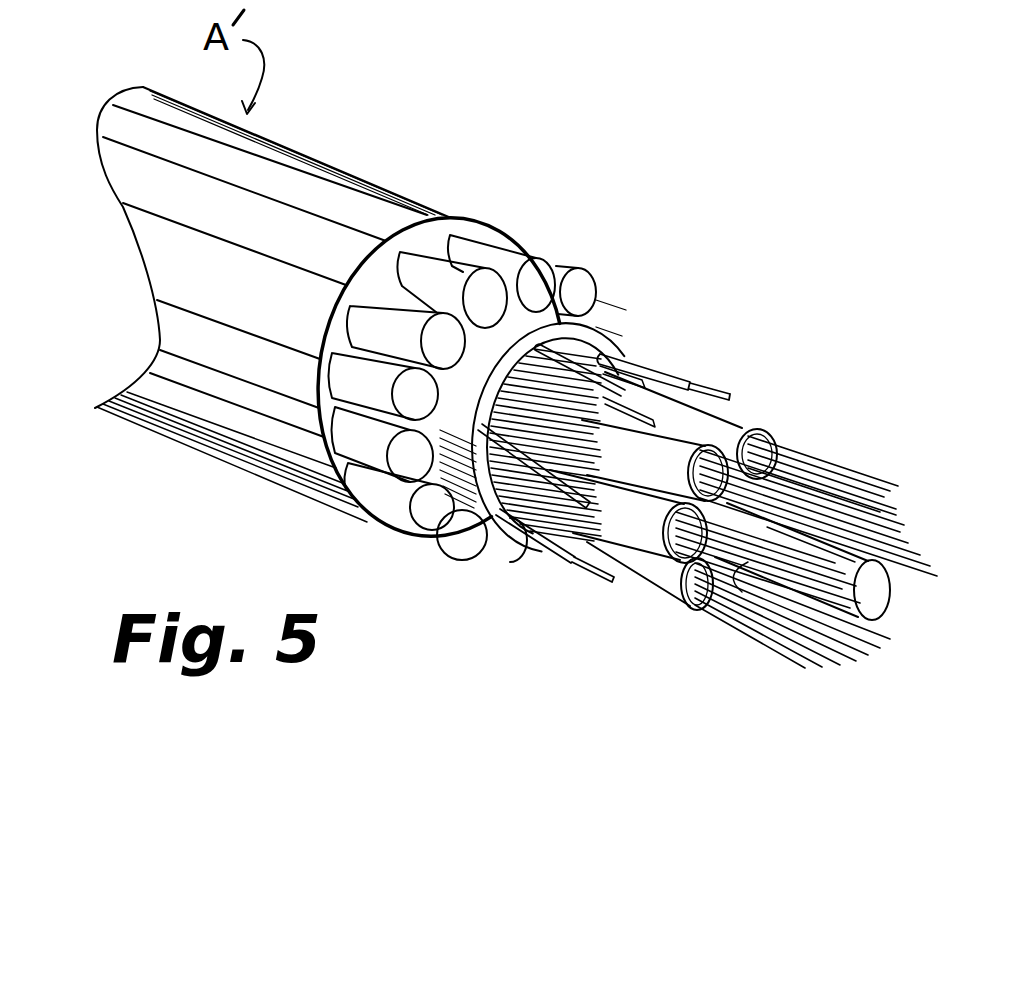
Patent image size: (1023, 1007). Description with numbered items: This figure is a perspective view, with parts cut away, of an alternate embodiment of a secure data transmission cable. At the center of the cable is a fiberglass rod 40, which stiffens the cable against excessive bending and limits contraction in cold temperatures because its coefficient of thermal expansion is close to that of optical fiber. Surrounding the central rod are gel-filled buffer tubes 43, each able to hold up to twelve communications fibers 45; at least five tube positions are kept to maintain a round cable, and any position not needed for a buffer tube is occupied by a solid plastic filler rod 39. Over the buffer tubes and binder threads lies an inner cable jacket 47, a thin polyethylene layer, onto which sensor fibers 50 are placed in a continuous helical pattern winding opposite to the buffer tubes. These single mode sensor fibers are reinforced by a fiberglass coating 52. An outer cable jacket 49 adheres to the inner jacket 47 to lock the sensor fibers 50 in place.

The solid plastic filler rods 39 is at (512, 505).
The fiberglass rod 40 is at (860, 562).
The buffer tubes 43 is at (743, 428).
The communications fibers 45 is at (863, 478).
The inner cable jacket 47 is at (621, 308).
The outer cable jacket 49 is at (484, 255).
The sensor fibers 50 is at (727, 390).
The fiberglass coating 52 is at (643, 363).